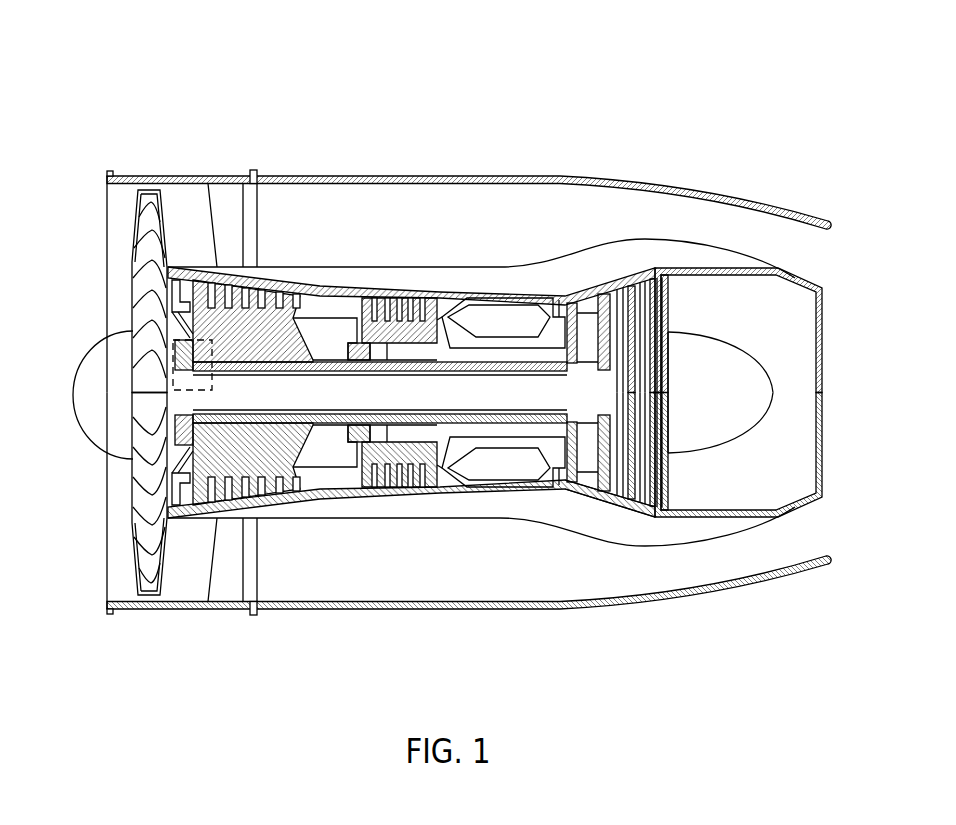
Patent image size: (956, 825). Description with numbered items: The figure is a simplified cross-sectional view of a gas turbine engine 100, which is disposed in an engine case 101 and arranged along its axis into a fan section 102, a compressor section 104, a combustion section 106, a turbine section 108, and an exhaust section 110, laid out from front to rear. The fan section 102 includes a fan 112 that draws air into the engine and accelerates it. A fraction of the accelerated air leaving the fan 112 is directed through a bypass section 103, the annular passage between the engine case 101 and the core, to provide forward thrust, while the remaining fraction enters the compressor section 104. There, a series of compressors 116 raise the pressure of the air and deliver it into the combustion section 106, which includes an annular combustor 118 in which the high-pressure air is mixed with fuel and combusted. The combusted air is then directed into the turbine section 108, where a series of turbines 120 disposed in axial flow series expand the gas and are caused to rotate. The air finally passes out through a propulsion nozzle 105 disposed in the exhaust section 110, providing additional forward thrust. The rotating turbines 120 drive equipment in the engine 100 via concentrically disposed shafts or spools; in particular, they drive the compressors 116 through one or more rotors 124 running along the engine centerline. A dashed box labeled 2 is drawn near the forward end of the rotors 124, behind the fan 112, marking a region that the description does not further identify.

The gas turbine engine 100 is at (301, 90).
The engine case 101 is at (226, 176).
The bypass section 103 is at (406, 214).
The propulsion nozzle 105 is at (755, 268).
The fan section 102 is at (177, 636).
The compressor section 104 is at (177, 636).
The combustion section 106 is at (532, 636).
The turbine section 108 is at (532, 636).
The exhaust section 110 is at (738, 456).
The fan 112 is at (142, 264).
The compressors 116 is at (272, 350).
The annular combustor 118 is at (530, 305).
The turbines 120 is at (670, 519).
The rotors 124 is at (313, 380).
The bearing housing 2 is at (212, 370).